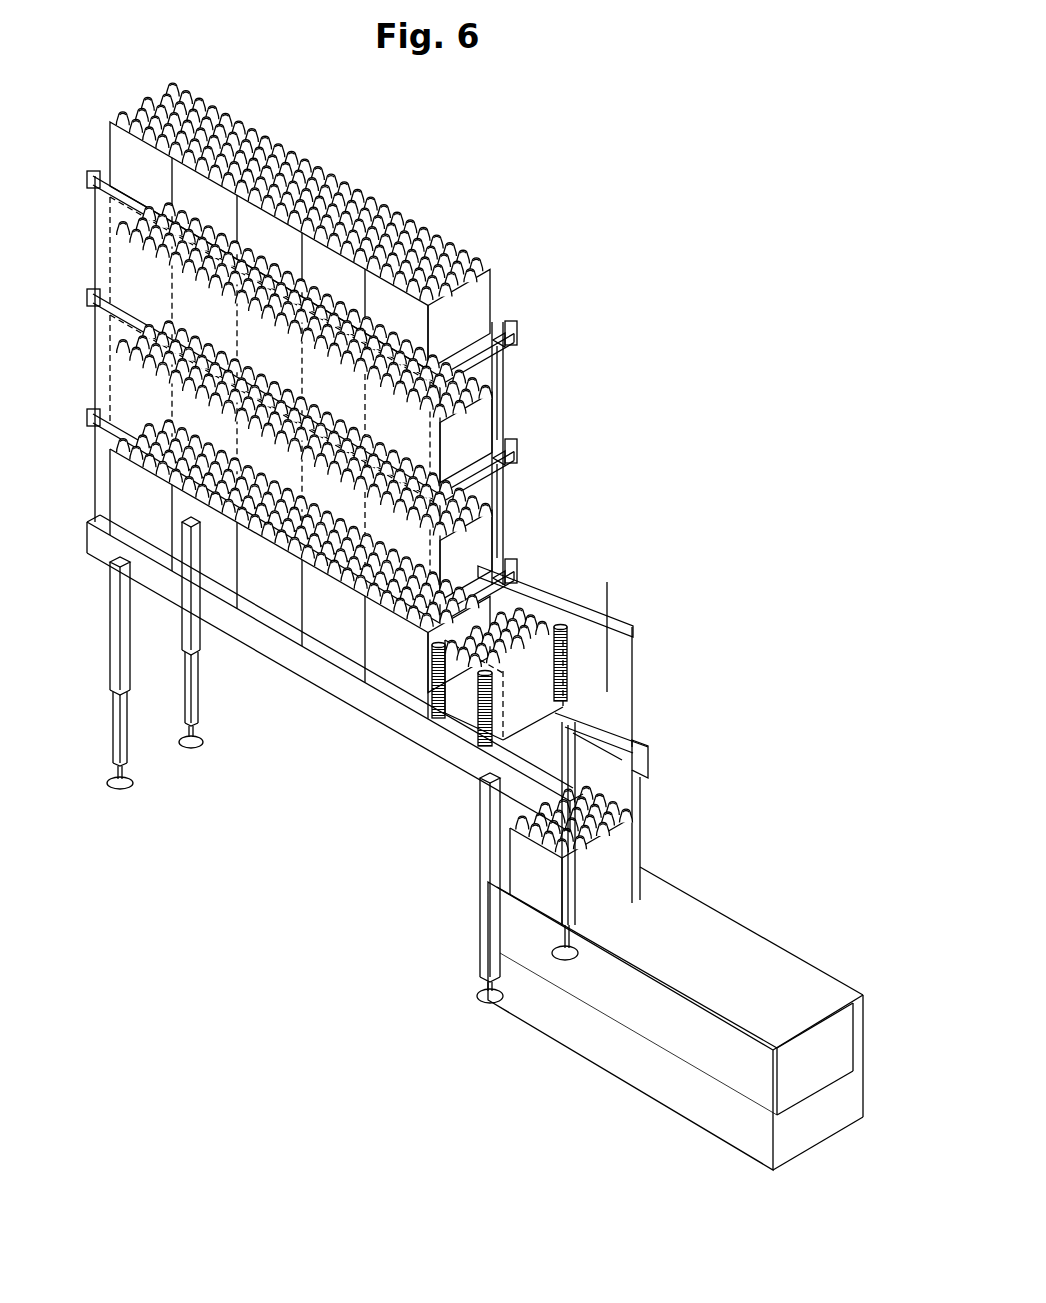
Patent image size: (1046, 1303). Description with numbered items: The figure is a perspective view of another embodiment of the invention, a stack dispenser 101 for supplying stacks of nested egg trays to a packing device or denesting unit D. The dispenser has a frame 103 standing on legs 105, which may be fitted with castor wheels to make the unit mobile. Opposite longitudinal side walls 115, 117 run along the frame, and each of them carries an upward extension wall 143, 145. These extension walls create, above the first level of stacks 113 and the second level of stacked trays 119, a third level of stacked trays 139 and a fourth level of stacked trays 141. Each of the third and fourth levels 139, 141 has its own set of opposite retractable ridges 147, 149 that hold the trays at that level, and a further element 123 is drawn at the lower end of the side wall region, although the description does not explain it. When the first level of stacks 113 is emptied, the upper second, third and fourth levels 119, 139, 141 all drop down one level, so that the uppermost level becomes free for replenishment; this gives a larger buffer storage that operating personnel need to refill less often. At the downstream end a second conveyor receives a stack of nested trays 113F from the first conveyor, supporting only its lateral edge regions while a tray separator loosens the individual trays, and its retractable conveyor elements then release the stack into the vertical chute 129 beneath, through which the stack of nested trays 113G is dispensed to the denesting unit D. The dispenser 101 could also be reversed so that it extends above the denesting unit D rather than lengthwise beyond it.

The stack dispenser 101 is at (538, 240).
The frame 103 is at (338, 686).
The legs 105 is at (187, 683).
The first level of stacks 113 is at (127, 472).
The stack of nested trays 113F is at (475, 658).
The stack of nested trays 113G is at (537, 857).
The longitudinal side wall 115 is at (95, 503).
The longitudinal side wall 117 is at (608, 668).
The second level of stacked trays 119 is at (123, 380).
The lower rail bracket 123 is at (497, 574).
The vertical chute 129 is at (637, 802).
The third level of stacked trays 139 is at (120, 262).
The fourth level of stacked trays 141 is at (141, 163).
The upward extension wall 143 is at (499, 490).
The upward extension wall 145 is at (500, 374).
The retractable ridges 147 is at (499, 452).
The retractable ridges 149 is at (496, 348).
The denesting unit D is at (617, 1047).